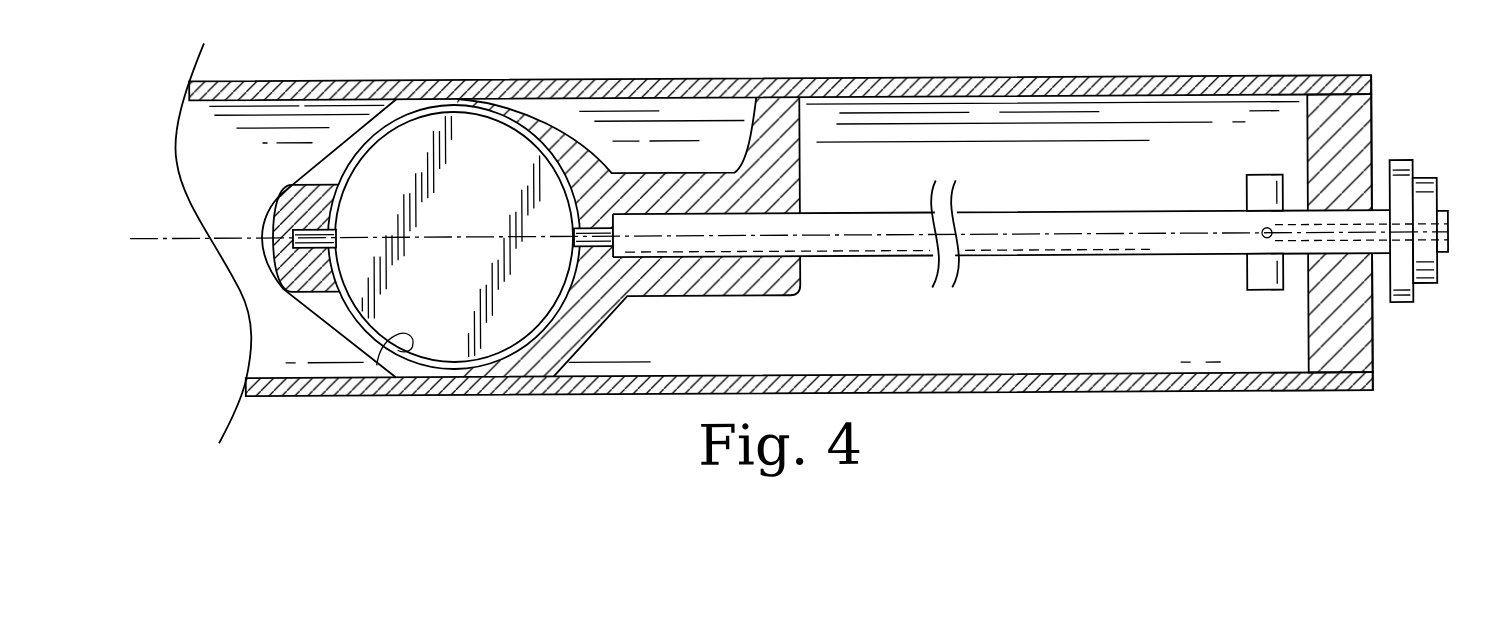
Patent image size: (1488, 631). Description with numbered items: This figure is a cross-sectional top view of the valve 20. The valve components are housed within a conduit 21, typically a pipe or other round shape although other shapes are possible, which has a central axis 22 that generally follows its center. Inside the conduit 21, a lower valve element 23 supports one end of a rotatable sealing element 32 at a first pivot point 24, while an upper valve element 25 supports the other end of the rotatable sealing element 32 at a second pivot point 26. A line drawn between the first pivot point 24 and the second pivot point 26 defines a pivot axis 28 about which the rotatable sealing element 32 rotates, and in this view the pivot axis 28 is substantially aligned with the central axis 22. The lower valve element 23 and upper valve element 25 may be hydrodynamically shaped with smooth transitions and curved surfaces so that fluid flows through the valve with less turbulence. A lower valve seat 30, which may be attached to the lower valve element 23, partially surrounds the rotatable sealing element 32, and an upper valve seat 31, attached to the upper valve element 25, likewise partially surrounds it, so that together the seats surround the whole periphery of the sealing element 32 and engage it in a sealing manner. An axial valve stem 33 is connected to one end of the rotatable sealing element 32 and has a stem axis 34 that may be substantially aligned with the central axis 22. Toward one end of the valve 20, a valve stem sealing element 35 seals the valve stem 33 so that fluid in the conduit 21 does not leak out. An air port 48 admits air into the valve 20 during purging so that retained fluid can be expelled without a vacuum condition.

The valve 20 is at (767, 222).
The conduit 21 is at (279, 81).
The central axis 22 is at (172, 242).
The lower valve element 23 is at (313, 314).
The first pivot point 24 is at (310, 224).
The upper valve element 25 is at (657, 173).
The second pivot point 26 is at (590, 268).
The pivot axis 28 is at (460, 241).
The lower valve seat 30 is at (376, 365).
The upper valve seat 31 is at (518, 142).
The rotatable sealing element 32 is at (408, 114).
The axial valve stem 33 is at (860, 216).
The stem axis 34 is at (1122, 217).
The valve stem sealing element 35 is at (1375, 127).
The air port 48 is at (1447, 230).